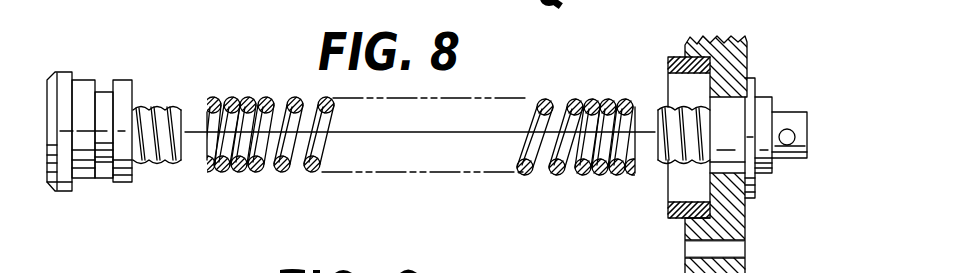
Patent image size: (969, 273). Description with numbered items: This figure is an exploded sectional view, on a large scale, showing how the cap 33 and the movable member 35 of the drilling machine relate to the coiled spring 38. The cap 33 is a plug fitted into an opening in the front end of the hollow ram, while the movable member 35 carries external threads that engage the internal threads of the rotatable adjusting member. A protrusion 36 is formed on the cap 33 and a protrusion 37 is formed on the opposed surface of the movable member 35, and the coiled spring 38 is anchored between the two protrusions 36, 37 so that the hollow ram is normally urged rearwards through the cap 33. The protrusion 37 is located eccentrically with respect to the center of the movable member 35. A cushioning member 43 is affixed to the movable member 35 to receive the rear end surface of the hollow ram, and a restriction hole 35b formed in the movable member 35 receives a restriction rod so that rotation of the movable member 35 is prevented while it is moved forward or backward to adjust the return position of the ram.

The cap 33 is at (85, 90).
The protrusion 36 is at (155, 115).
The coiled spring 38 is at (590, 100).
The protrusion 37 is at (661, 148).
The cushioning member 43 is at (669, 62).
The movable member 35 is at (737, 70).
The restriction hole 35b is at (700, 258).